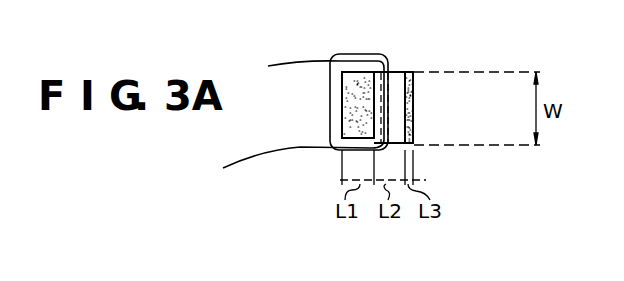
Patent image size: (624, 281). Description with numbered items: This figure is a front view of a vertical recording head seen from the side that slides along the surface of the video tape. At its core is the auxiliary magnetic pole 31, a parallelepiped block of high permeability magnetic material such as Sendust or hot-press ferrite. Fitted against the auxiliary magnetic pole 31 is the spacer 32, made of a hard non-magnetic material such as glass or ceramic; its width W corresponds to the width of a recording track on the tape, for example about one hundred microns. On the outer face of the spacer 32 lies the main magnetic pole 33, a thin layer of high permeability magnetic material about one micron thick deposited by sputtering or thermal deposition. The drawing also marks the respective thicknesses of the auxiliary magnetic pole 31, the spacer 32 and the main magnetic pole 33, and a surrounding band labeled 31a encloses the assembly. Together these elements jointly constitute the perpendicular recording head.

The outer band 31a is at (295, 63).
The auxiliary magnetic pole 31 is at (353, 76).
The spacer 32 is at (400, 73).
The main magnetic pole 33 is at (414, 103).